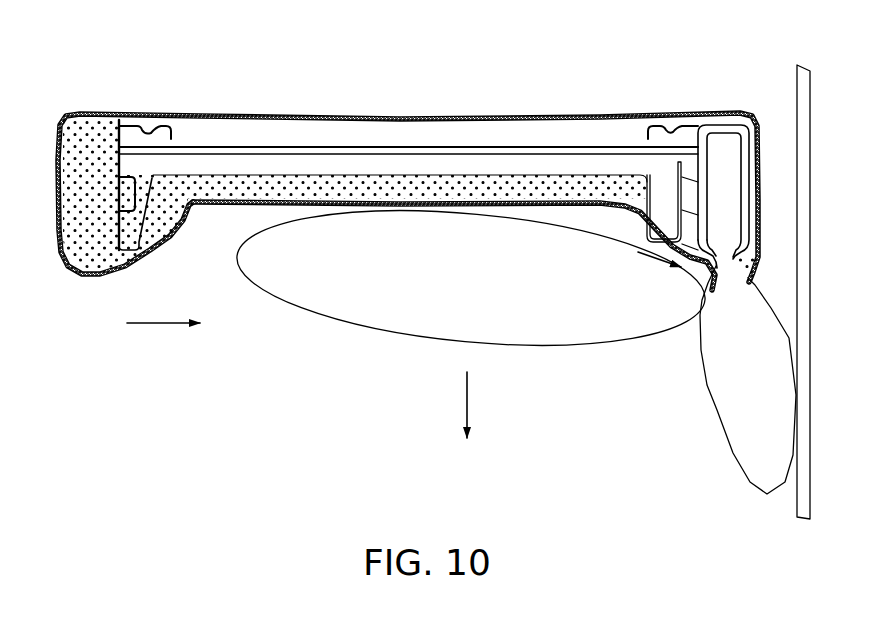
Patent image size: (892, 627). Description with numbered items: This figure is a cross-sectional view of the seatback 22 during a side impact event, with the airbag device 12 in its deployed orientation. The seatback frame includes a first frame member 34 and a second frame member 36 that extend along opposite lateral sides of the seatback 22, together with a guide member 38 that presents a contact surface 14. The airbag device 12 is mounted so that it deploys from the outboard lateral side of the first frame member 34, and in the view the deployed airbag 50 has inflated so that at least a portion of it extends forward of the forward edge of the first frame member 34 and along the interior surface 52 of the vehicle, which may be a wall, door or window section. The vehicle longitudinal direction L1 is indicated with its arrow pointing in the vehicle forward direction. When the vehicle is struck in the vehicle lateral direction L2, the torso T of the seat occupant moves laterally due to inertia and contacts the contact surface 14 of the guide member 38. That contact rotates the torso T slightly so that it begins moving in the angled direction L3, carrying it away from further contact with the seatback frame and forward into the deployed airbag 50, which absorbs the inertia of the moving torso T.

The seatback 22 is at (266, 68).
The contact surface 14 is at (658, 228).
The second frame member 36 is at (129, 125).
The first frame member 34 is at (654, 125).
The guide member 38 is at (666, 169).
The airbag device 12 is at (725, 125).
The torso T is at (360, 287).
The deployed airbag 50 is at (747, 422).
The interior surface 52 is at (793, 497).
The vehicle longitudinal direction L1 is at (467, 398).
The vehicle lateral direction L2 is at (158, 323).
The angled direction L3 is at (648, 257).